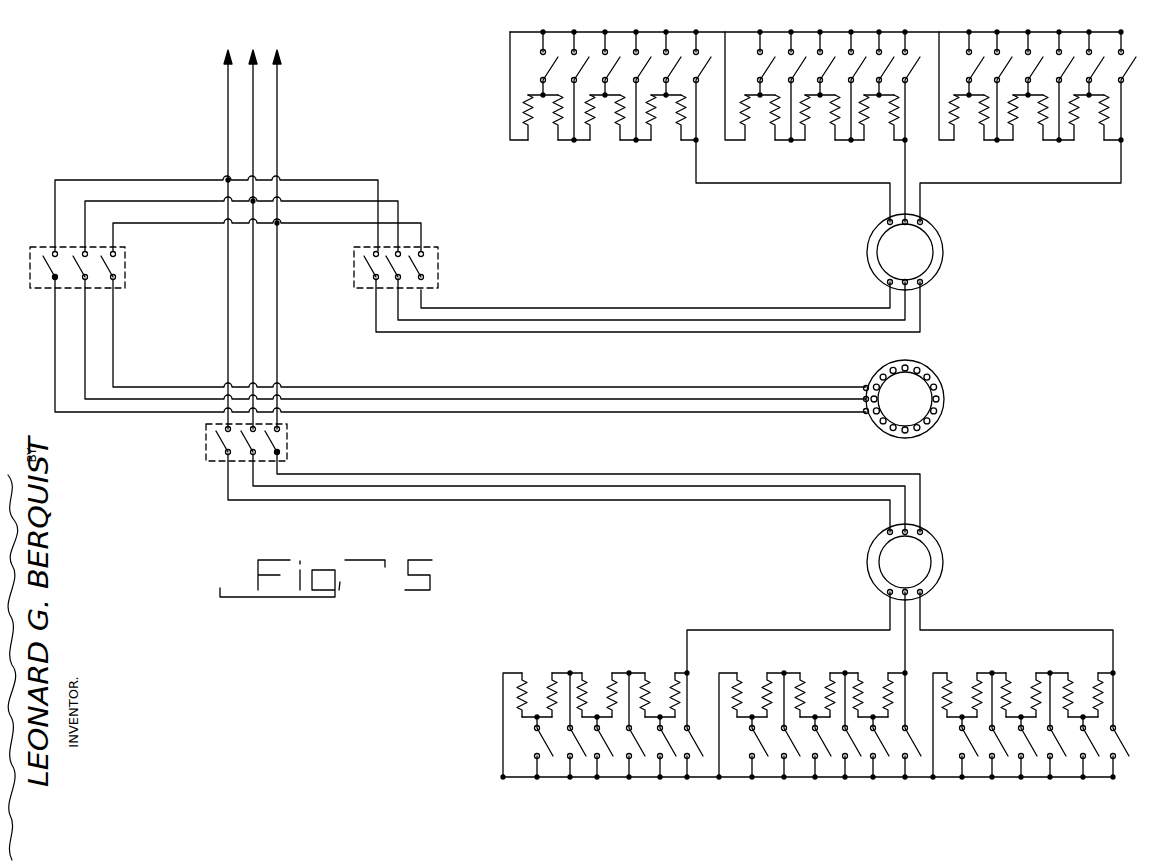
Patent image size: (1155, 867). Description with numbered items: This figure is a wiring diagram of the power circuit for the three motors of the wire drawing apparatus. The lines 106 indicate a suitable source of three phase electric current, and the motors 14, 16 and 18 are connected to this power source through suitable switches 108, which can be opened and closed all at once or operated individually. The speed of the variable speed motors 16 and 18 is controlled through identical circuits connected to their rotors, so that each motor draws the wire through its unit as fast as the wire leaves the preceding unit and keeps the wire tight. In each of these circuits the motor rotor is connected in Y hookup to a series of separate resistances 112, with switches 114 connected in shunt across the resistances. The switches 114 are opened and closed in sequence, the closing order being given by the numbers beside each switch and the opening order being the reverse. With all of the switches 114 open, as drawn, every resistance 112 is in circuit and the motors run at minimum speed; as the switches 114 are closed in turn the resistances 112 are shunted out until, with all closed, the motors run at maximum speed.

The motor 14 is at (941, 412).
The variable speed motor 16 is at (941, 258).
The variable speed motor 18 is at (941, 558).
The lines 106 is at (262, 90).
The switches 108 is at (125, 270).
The resistances 112 is at (676, 118).
The switches 114 is at (702, 60).